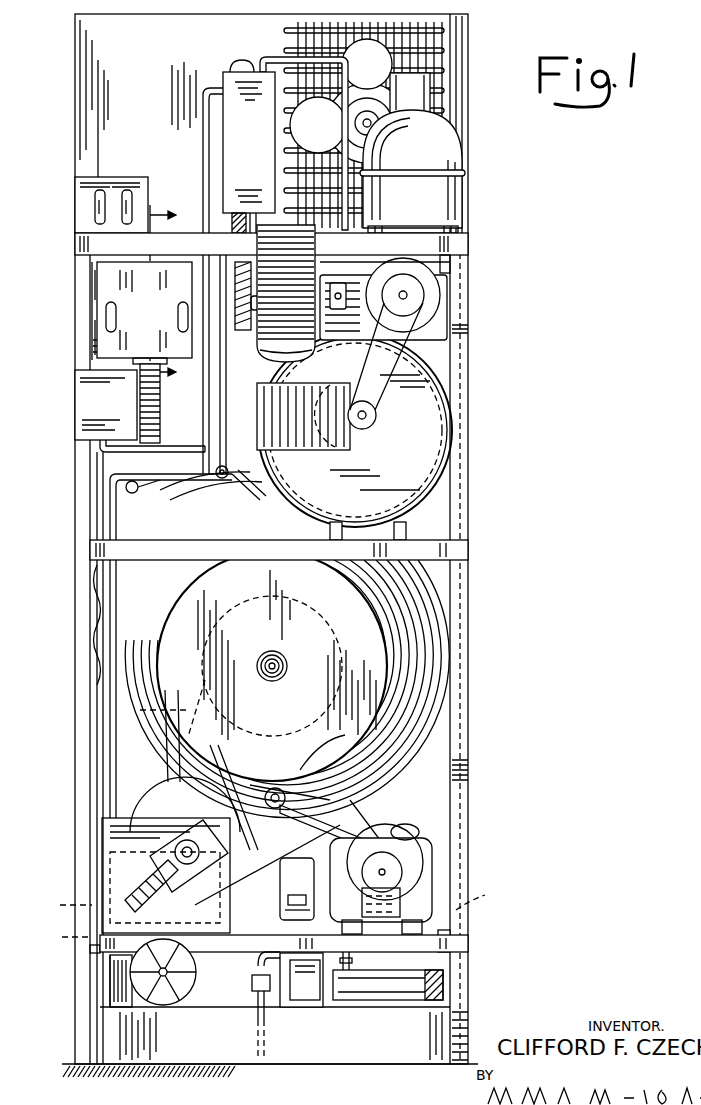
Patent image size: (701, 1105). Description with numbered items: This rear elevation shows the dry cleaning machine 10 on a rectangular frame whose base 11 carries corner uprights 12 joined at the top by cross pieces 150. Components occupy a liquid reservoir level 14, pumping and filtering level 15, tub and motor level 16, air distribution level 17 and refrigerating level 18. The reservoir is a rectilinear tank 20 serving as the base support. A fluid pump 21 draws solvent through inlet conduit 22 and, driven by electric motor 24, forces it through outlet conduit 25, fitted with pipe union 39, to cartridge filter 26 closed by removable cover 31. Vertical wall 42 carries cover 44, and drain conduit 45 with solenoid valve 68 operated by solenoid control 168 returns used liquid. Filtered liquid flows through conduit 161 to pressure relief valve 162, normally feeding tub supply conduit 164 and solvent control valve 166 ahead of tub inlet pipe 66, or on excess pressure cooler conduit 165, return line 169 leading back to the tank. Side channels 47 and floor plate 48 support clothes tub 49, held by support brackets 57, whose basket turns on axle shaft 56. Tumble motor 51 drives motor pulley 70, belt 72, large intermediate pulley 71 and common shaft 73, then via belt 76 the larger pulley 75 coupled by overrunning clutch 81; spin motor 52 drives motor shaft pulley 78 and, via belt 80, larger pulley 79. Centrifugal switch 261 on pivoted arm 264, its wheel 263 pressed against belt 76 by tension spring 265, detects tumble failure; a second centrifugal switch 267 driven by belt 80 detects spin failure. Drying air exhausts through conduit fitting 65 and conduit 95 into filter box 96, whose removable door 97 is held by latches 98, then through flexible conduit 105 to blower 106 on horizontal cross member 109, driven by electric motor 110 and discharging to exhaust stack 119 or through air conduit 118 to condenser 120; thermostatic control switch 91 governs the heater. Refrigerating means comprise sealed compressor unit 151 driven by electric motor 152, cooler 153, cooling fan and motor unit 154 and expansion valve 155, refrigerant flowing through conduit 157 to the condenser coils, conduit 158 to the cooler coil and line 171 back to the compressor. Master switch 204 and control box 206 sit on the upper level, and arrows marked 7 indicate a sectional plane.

The dry cleaning machine 10 is at (470, 392).
The base 11 is at (135, 1064).
The corner uprights 12 is at (90, 966).
The liquid reservoir level 14 is at (470, 1020).
The liquid pumping and filtering level 15 is at (470, 962).
The tub and motor level 16 is at (468, 668).
The air distribution level 17 is at (468, 330).
The refrigerating level 18 is at (470, 142).
The rectilinear tank 20 is at (100, 1026).
The fluid pump 21 is at (335, 998).
The inlet conduit 22 is at (258, 1005).
The electric motor 24 is at (388, 985).
The outlet conduit 25 is at (345, 966).
The cartridge type filter 26 is at (190, 980).
The removable cover 31 is at (192, 1002).
The pipe union 39 is at (260, 965).
The vertical wall 42 is at (445, 988).
The cover 44 is at (448, 955).
The drain conduit 45 is at (301, 995).
The side channels 47 is at (263, 795).
The floor plate 48 is at (92, 937).
The clothes tub 49 is at (455, 565).
The tumble motor 51 is at (415, 870).
The spin motor 52 is at (90, 950).
The axle shaft 56 is at (276, 658).
The support brackets 57 is at (462, 772).
The conduit fitting 65 is at (142, 448).
The pipe 66 is at (205, 500).
The solenoid valve 68 is at (376, 911).
The motor pulley 70 is at (392, 850).
The large intermediate pulley 71 is at (170, 775).
The belt 72 is at (358, 835).
The common shaft 73 is at (190, 835).
The tumble pulley 75 is at (388, 680).
The belt 76 is at (298, 770).
The motor shaft pulley 78 is at (165, 905).
The larger pulley 79 is at (352, 648).
The belt 80 is at (160, 676).
The overrunning clutch 81 is at (275, 678).
The thermostatic control switch 91 is at (126, 488).
The conduit 95 is at (160, 404).
The filter box 96 is at (97, 288).
The removable door 97 is at (97, 348).
The latches 98 is at (180, 316).
The flexible conduit 105 is at (310, 378).
The blower 106 is at (452, 462).
The horizontal cross member 109 is at (458, 512).
The electric motor 110 is at (456, 262).
The air conduit 118 is at (380, 247).
The exhaust stack 119 is at (330, 243).
The condenser means 120 is at (447, 340).
The cross pieces 150 is at (468, 213).
The sealed compressor unit 151 is at (466, 186).
The electric motor 152 is at (470, 92).
The cooler 153 is at (470, 40).
The cooling fan and motor unit 154 is at (382, 116).
The expansion valve 155 is at (210, 257).
The conduit 157 is at (233, 295).
The conduit 158 is at (232, 68).
The conduit 161 is at (118, 612).
The pressure relief valve 162 is at (240, 478).
The tub supply conduit 164 is at (250, 492).
The cooler conduit 165 is at (262, 362).
The solvent control valve 166 is at (232, 500).
The solenoid control 168 is at (296, 889).
The return line 169 is at (204, 150).
The line 171 is at (262, 60).
The master switch 204 is at (75, 211).
The control box 206 is at (75, 415).
The section line 7 is at (169, 294).
The centrifugally operated switch 261 is at (300, 805).
The pulley or wheel 263 is at (300, 823).
The pivotally supported arm 264 is at (283, 785).
The tension spring 265 is at (268, 790).
The second centrifugal switch 267 is at (300, 785).